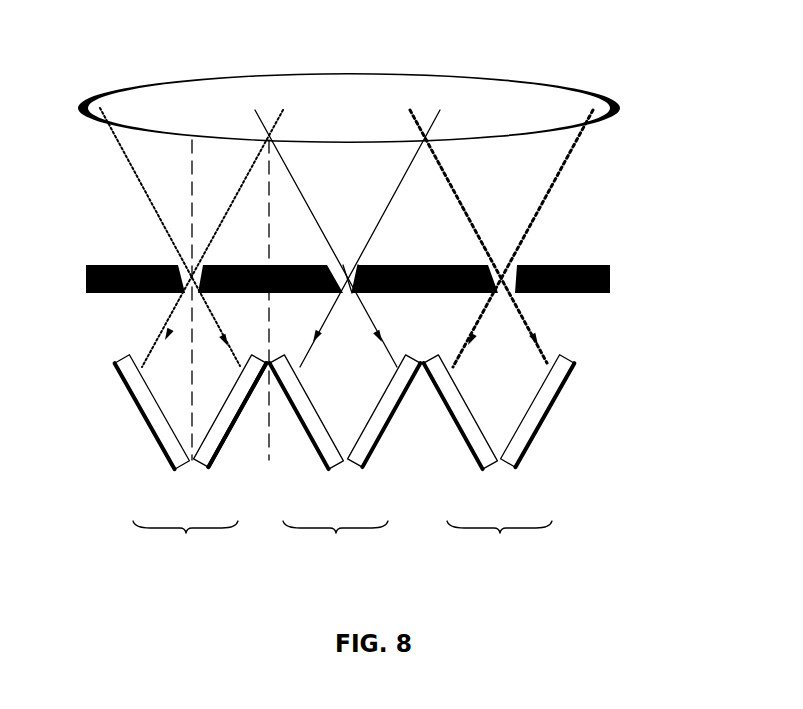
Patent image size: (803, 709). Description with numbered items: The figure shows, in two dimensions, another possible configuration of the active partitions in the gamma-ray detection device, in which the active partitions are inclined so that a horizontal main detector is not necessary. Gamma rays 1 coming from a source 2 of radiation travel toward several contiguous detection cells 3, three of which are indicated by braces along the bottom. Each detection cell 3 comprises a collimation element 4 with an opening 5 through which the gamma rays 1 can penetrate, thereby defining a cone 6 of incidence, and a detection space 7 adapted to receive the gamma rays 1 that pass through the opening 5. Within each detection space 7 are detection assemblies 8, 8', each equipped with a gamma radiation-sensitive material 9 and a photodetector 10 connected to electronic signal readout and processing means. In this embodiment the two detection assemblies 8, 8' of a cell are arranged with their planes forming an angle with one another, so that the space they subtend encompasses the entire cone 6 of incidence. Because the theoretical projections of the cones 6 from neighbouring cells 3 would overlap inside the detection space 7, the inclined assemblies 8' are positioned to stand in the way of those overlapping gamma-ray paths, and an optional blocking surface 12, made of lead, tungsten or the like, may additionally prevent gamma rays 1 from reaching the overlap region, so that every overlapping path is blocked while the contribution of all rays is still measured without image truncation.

The gamma ray 1 is at (126, 166).
The source of radiation 2 is at (345, 101).
The detection cell 3 is at (342, 546).
The collimation element 4 is at (578, 265).
The opening 5 is at (347, 275).
The cone of incidence of the gamma rays 6 is at (160, 336).
The detection space 7 is at (339, 384).
The assembly for the detection of gamma rays 8 is at (191, 409).
The assembly for the detection (active partition) of gamma rays 8' is at (237, 387).
The gamma radiation-sensitive material 9 is at (560, 368).
The photodetectors 10 is at (552, 411).
The blocking surface 12 is at (398, 433).